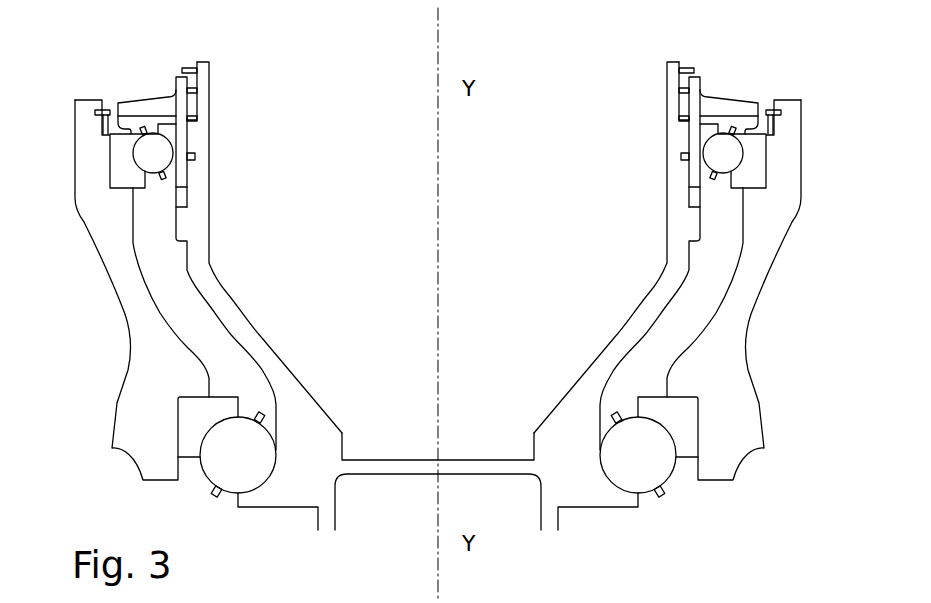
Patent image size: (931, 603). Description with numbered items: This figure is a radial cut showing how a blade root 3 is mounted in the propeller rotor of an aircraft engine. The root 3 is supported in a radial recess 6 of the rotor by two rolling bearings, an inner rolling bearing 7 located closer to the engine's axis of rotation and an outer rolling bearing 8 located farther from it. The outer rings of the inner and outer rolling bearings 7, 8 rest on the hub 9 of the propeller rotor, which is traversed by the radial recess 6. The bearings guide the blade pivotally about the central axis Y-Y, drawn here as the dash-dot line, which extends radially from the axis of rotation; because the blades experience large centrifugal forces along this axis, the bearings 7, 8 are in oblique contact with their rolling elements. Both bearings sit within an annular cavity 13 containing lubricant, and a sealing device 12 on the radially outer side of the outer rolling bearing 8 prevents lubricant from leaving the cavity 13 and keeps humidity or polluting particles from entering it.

The root 3 is at (354, 363).
The radial recess 6 is at (130, 85).
The inner rolling bearing 7 is at (624, 384).
The outer rolling bearing 8 is at (710, 220).
The hub 9 is at (782, 199).
The sealing device 12 is at (92, 130).
The annular cavity 13 is at (703, 308).